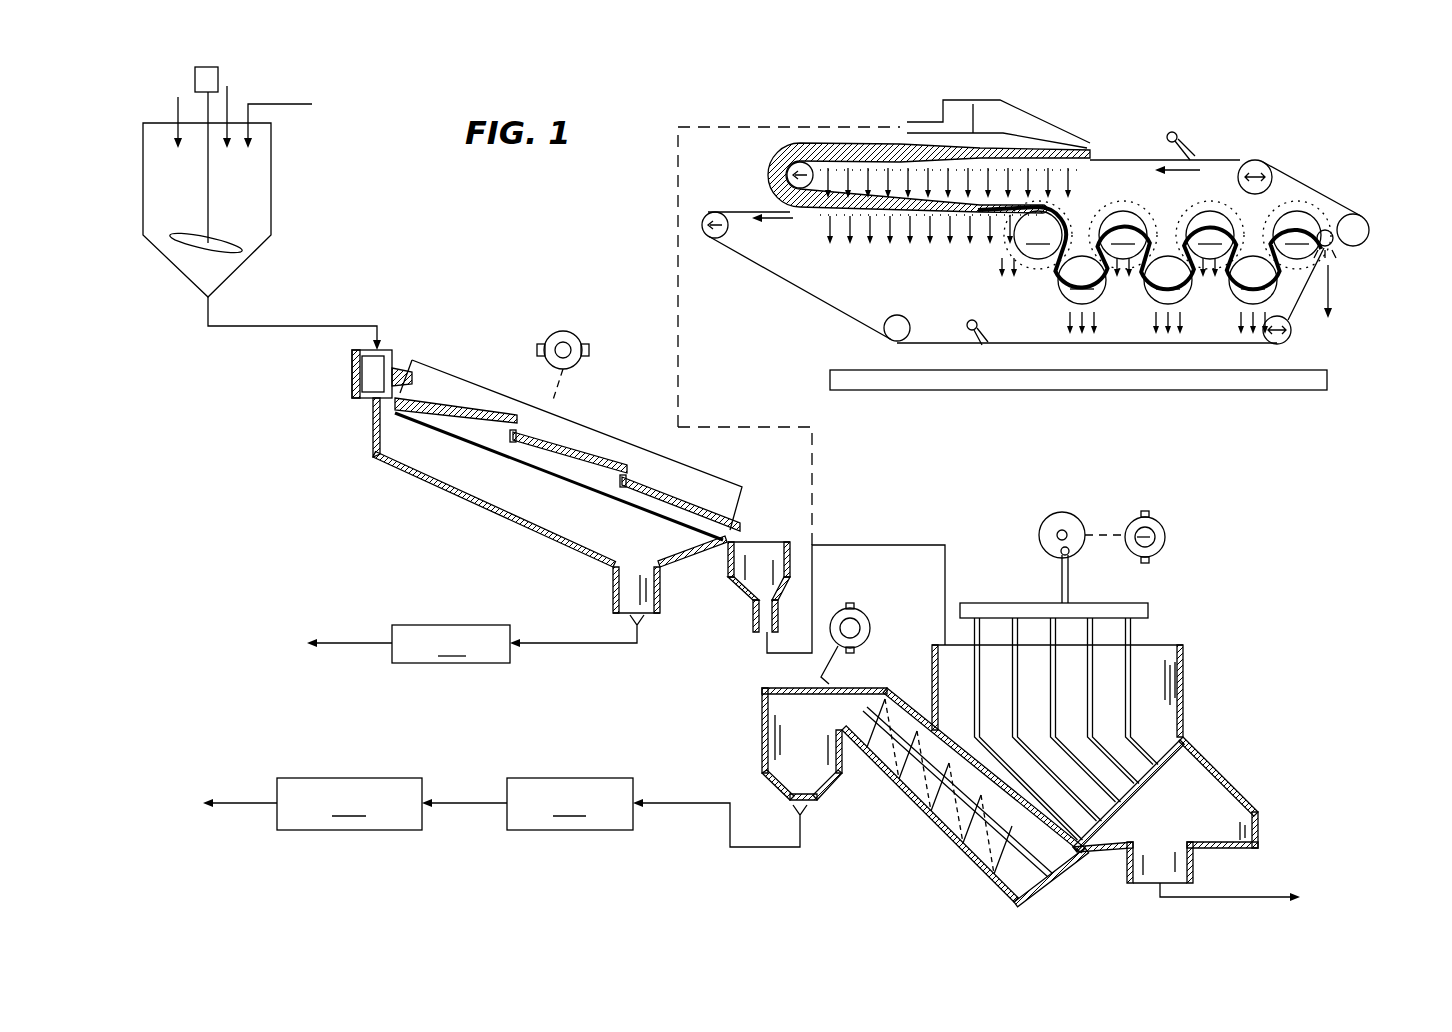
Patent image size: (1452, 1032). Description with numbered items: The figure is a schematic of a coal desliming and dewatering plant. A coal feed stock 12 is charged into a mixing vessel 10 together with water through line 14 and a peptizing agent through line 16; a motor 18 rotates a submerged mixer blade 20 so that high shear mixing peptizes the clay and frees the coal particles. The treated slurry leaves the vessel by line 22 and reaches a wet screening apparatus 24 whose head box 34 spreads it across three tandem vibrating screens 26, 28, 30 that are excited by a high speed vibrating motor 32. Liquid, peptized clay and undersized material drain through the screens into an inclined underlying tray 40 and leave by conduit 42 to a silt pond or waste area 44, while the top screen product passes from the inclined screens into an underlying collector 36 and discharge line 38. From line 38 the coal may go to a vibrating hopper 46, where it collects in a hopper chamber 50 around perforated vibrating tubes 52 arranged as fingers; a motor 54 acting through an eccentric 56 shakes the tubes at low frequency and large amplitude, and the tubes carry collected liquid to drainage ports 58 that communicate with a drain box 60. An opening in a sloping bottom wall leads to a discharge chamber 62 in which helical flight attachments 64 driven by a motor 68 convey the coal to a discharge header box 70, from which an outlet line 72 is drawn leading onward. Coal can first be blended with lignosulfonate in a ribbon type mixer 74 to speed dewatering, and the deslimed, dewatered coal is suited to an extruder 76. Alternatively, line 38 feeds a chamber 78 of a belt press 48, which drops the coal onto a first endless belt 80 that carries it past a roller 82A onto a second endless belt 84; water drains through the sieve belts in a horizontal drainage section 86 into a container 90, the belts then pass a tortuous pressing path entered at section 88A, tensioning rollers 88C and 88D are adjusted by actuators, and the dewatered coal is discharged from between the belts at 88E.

The mixing vessel 10 is at (272, 175).
The coal feed stock 12 is at (176, 106).
The water line 14 is at (230, 103).
The peptizing agent line 16 is at (313, 103).
The motor 18 is at (195, 81).
The mixer blade 20 is at (182, 252).
The discharge line 22 is at (325, 325).
The wet screening apparatus 24 is at (531, 398).
The first vibrating screen 26 is at (455, 400).
The second vibrating screen 28 is at (594, 453).
The third vibrating screen 30 is at (706, 506).
The vibrating motor 32 is at (578, 333).
The head box 34 is at (352, 380).
The collector 36 is at (792, 542).
The discharge line 38 is at (812, 571).
The inclined underlying tray 40 is at (528, 530).
The conduit 42 is at (577, 631).
The silt pond or waste area 44 is at (408, 644).
The vibrating hopper 46 is at (1193, 697).
The belt press 48 is at (795, 293).
The hopper chamber 50 is at (1153, 643).
The vibrating tubes 52 is at (975, 712).
The motor 54 is at (1165, 535).
The eccentric 56 is at (1079, 518).
The drainage ports 58 is at (1142, 792).
The drain box 60 is at (1236, 790).
The discharge chamber 62 is at (968, 849).
The helical flight attachments 64 is at (935, 810).
The motor 68 is at (866, 617).
The discharge header box 70 is at (821, 750).
The hopper outlet 72 is at (778, 847).
The ribbon type mixer 74 is at (527, 804).
The extruder 76 is at (312, 804).
The chamber 78 is at (1079, 125).
The first endless belt 80 is at (1218, 158).
The roller 82A is at (781, 160).
The second endless belt 84 is at (765, 210).
The horizontal drainage section 86 is at (883, 238).
The roller / pressing section entry 88A is at (1022, 281).
The rollers 88C is at (703, 221).
The rollers 88D is at (1270, 170).
The discharge point 88E is at (1338, 253).
The container 90 is at (848, 368).